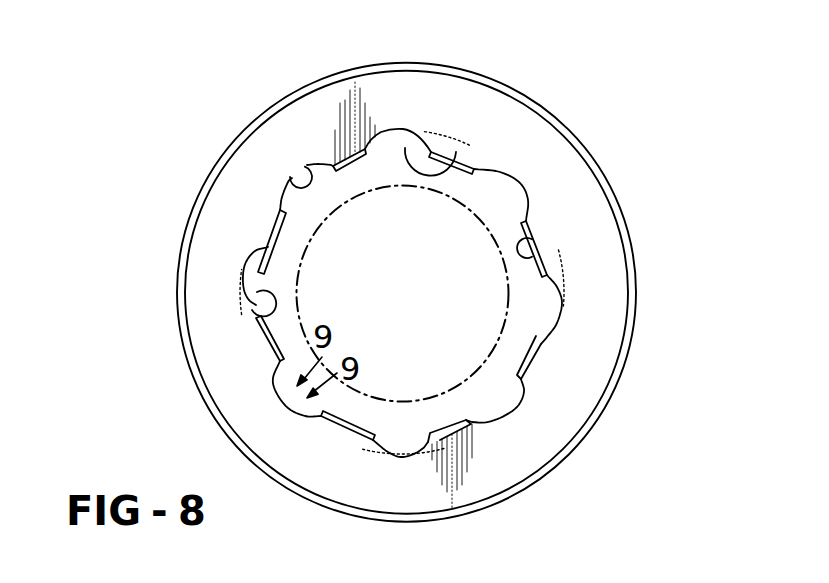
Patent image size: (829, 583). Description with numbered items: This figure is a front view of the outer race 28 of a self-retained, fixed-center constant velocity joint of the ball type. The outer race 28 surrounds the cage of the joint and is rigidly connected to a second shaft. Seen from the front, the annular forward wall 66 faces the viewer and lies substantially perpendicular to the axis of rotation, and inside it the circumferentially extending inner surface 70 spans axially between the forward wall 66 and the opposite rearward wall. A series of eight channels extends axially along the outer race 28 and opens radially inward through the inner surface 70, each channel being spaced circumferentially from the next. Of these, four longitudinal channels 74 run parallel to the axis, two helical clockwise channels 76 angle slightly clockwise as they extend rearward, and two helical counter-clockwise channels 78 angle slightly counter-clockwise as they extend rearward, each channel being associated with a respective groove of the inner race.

The outer race 28 is at (549, 84).
The annular forward wall 66 is at (553, 167).
The inner surface 70 is at (530, 236).
The longitudinal channels 74 is at (303, 168).
The helical clockwise channels 76 is at (450, 168).
The helical counter-clockwise channels 78 is at (247, 323).